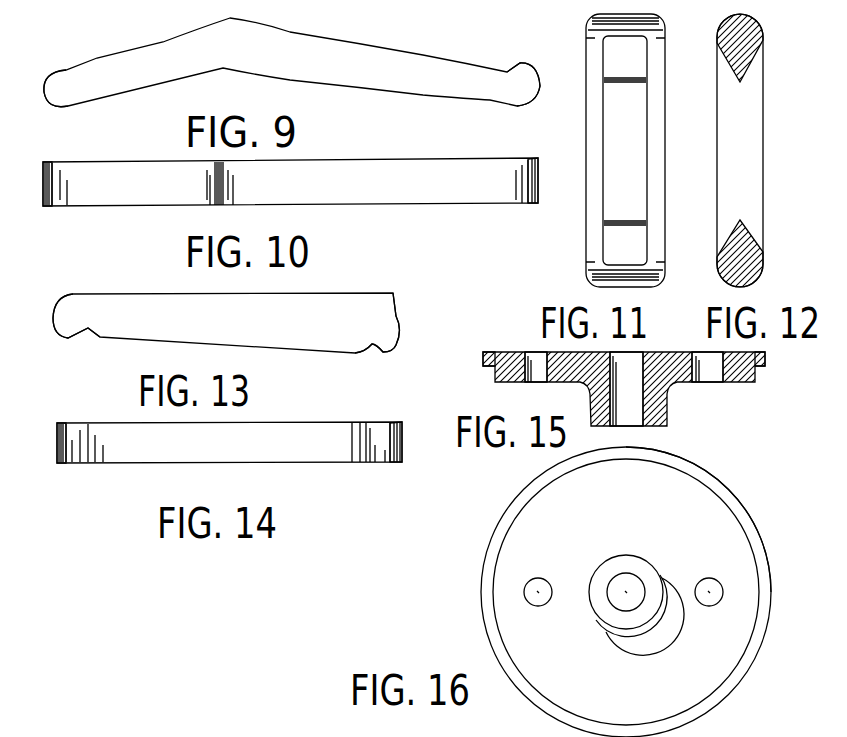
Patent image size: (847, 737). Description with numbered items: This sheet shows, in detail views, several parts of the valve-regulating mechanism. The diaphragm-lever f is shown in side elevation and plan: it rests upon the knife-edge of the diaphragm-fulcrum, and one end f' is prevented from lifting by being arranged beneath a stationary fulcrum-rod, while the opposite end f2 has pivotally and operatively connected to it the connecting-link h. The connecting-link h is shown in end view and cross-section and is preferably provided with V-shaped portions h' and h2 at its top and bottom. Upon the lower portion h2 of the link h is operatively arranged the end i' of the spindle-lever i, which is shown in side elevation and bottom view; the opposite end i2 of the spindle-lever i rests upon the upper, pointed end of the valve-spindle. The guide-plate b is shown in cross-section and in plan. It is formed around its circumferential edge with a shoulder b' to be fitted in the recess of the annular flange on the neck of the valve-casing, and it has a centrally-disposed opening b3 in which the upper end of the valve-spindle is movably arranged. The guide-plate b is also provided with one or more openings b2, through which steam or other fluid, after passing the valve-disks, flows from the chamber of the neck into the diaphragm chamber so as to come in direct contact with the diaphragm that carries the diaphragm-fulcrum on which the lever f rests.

In FIG. 9, the lever f is at (292, 62).
In FIG. 10, the lever f is at (290, 182).
In FIG. 9, the end of lever f' is at (522, 68).
In FIG. 10, the end of lever f' is at (551, 180).
In FIG. 9, the opposite end of lever f2 is at (58, 82).
In FIG. 10, the opposite end of lever f2 is at (43, 182).
In FIG. 11, the connecting-link h is at (640, 150).
In FIG. 12, the connecting-link h is at (734, 150).
In FIG. 11, the V-shaped portion h' is at (625, 66).
In FIG. 12, the V-shaped portion h' is at (760, 48).
In FIG. 11, the V-shaped portion h2 is at (625, 239).
In FIG. 12, the V-shaped portion h2 is at (753, 237).
In FIG. 13, the spindle-lever i is at (226, 323).
In FIG. 14, the spindle-lever i is at (229, 442).
In FIG. 13, the end of spindle-lever i' is at (76, 316).
In FIG. 14, the end of spindle-lever i' is at (49, 443).
In FIG. 13, the opposite end of spindle-lever i2 is at (377, 323).
In FIG. 14, the opposite end of spindle-lever i2 is at (402, 441).
In FIG. 15, the guide-plate b is at (624, 377).
In FIG. 16, the guide-plate b is at (626, 592).
In FIG. 15, the shoulder b' is at (622, 363).
In FIG. 16, the shoulder b' is at (715, 519).
In FIG. 15, the openings b2 is at (722, 395).
In FIG. 16, the openings b2 is at (542, 584).
In FIG. 15, the centrally-disposed opening b3 is at (634, 425).
In FIG. 16, the centrally-disposed opening b3 is at (628, 580).